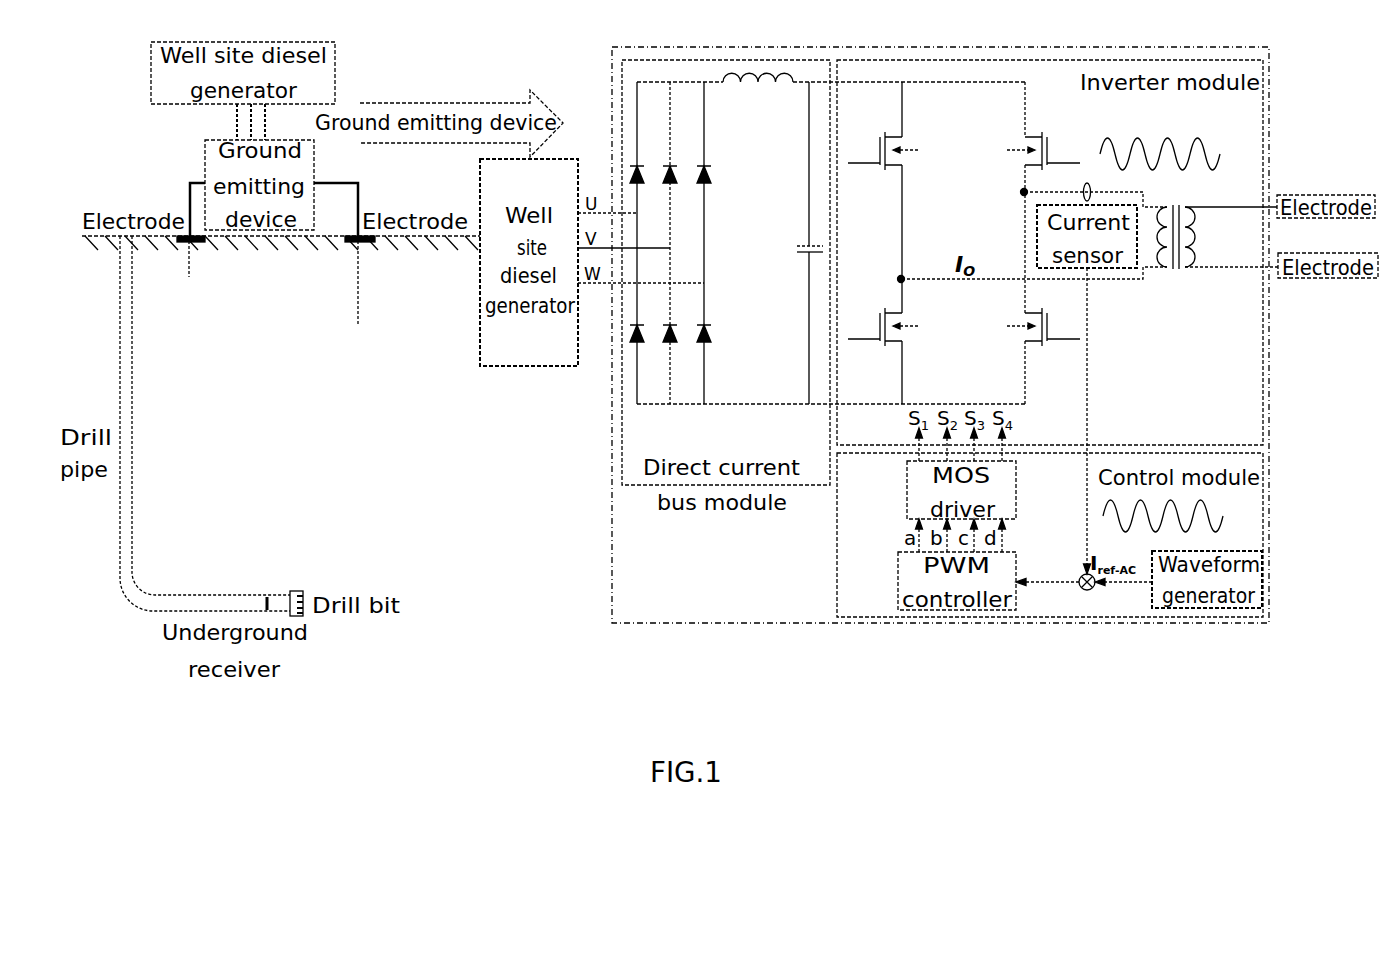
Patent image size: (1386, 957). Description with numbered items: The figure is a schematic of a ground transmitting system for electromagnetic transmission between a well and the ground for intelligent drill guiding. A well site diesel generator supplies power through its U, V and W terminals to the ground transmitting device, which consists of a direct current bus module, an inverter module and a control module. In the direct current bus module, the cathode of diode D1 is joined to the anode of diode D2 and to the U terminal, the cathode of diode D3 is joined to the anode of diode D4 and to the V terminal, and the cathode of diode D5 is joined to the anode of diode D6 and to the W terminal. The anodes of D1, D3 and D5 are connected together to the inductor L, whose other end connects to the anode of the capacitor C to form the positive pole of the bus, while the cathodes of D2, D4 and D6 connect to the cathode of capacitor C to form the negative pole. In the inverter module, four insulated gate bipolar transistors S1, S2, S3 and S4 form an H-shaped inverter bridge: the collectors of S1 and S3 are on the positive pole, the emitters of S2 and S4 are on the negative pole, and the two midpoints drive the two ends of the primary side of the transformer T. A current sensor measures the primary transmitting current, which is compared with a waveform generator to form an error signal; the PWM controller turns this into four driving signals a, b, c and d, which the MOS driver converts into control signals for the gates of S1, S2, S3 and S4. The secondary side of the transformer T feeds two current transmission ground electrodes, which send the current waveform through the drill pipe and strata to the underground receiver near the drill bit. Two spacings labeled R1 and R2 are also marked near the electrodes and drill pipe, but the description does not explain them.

The distance R1 is at (188, 263).
The distance R2 is at (358, 313).
The diode D1 is at (647, 163).
The diode D2 is at (647, 322).
The diode D3 is at (680, 163).
The diode D4 is at (680, 322).
The diode D5 is at (714, 163).
The diode D6 is at (714, 322).
The inductor L is at (758, 92).
The capacitor C is at (798, 243).
The insulated gate bipolar transistor S1 is at (883, 151).
The insulated gate bipolar transistor S2 is at (883, 327).
The insulated gate bipolar transistor S3 is at (1043, 151).
The insulated gate bipolar transistor S4 is at (1043, 327).
The transformer T is at (1176, 251).